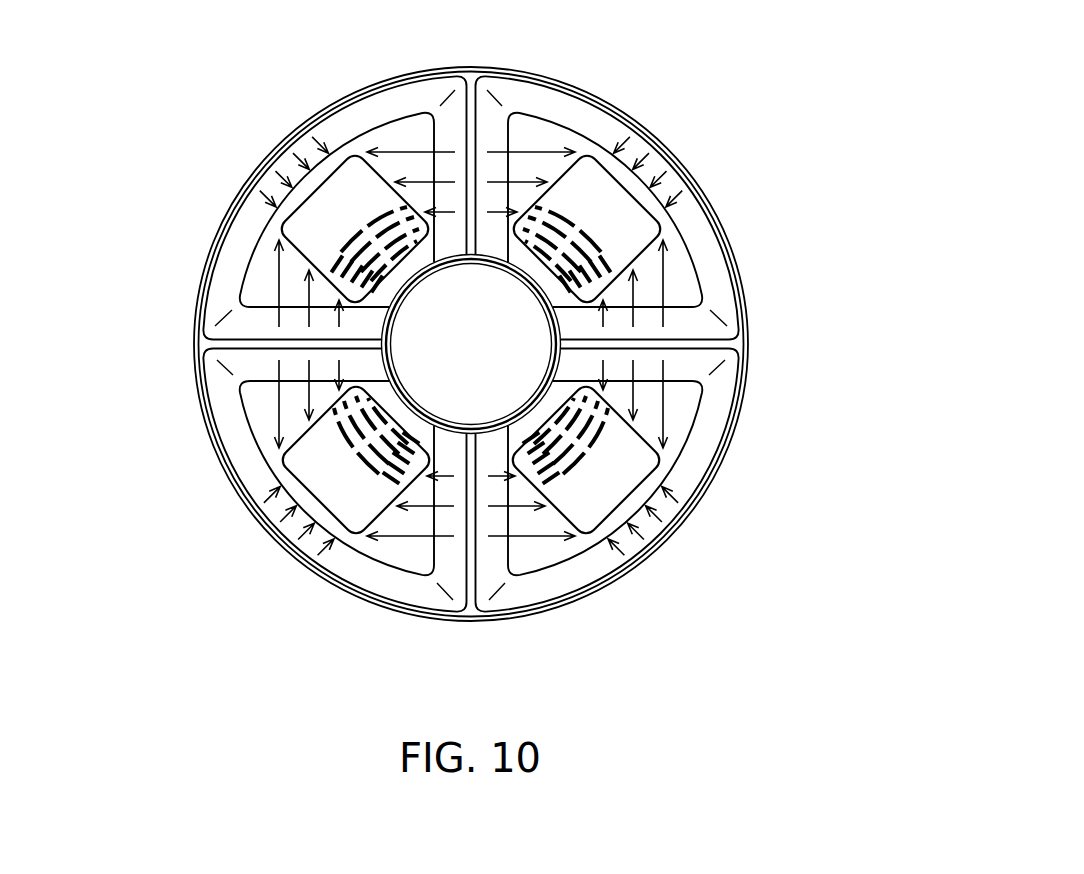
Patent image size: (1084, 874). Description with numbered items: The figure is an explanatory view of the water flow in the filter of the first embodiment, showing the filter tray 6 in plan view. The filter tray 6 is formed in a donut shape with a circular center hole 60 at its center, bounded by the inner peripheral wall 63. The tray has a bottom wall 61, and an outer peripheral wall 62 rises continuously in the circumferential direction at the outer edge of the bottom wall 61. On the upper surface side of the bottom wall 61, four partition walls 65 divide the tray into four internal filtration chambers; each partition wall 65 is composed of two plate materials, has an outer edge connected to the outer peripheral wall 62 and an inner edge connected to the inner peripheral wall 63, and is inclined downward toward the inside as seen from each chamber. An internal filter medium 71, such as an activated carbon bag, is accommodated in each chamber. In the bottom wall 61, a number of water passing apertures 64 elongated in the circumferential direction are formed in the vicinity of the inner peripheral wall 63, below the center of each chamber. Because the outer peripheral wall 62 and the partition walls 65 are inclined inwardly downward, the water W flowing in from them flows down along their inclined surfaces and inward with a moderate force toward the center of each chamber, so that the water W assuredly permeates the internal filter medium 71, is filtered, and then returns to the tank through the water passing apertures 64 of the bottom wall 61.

The filter tray 6 is at (498, 350).
The center hole 60 is at (484, 292).
The bottom wall 61 is at (680, 424).
The outer peripheral wall 62 is at (738, 378).
The inner peripheral wall 63 is at (412, 287).
The water passing apertures 64 is at (347, 243).
The partition wall 65 is at (425, 135).
The internal filter medium 71 is at (353, 140).
The water W is at (280, 167).